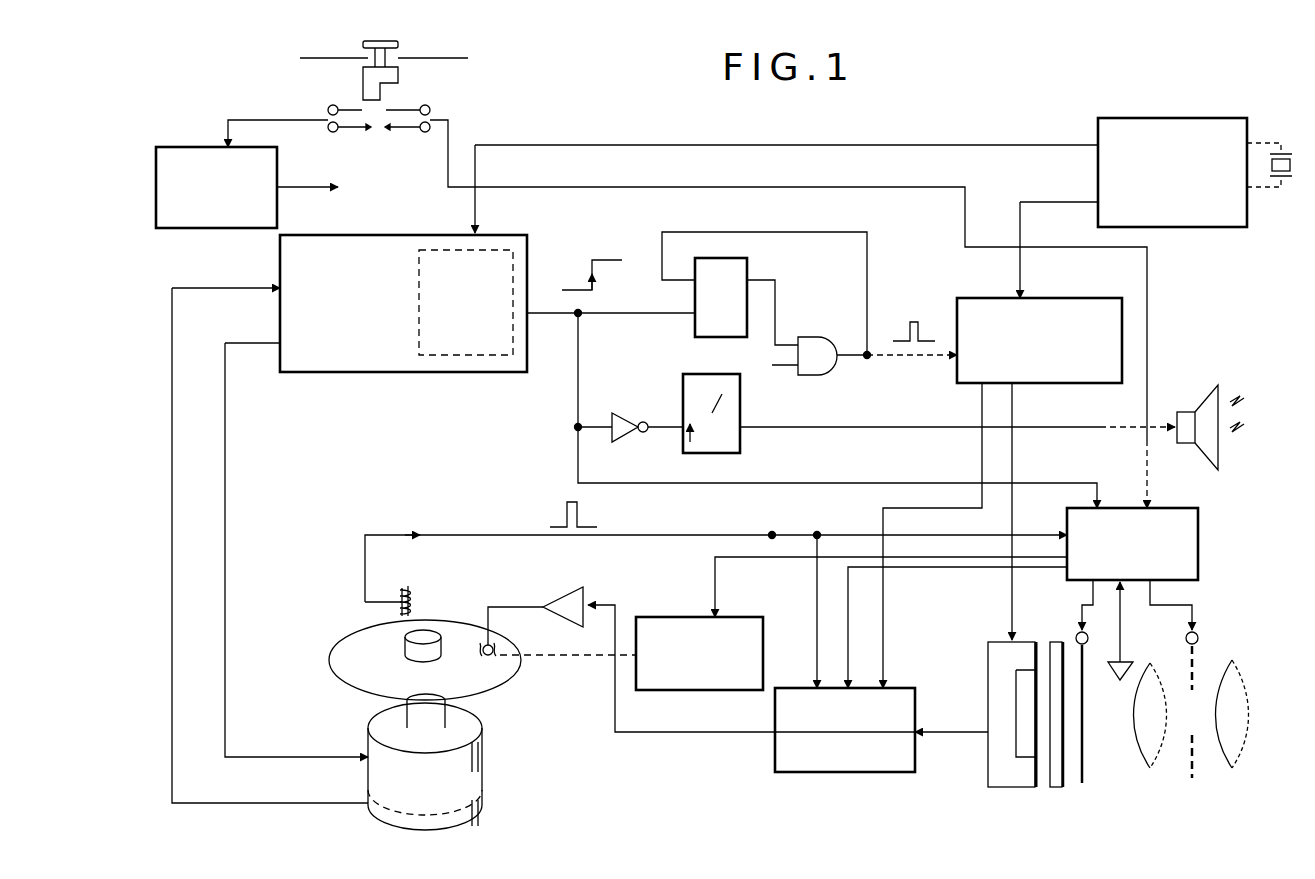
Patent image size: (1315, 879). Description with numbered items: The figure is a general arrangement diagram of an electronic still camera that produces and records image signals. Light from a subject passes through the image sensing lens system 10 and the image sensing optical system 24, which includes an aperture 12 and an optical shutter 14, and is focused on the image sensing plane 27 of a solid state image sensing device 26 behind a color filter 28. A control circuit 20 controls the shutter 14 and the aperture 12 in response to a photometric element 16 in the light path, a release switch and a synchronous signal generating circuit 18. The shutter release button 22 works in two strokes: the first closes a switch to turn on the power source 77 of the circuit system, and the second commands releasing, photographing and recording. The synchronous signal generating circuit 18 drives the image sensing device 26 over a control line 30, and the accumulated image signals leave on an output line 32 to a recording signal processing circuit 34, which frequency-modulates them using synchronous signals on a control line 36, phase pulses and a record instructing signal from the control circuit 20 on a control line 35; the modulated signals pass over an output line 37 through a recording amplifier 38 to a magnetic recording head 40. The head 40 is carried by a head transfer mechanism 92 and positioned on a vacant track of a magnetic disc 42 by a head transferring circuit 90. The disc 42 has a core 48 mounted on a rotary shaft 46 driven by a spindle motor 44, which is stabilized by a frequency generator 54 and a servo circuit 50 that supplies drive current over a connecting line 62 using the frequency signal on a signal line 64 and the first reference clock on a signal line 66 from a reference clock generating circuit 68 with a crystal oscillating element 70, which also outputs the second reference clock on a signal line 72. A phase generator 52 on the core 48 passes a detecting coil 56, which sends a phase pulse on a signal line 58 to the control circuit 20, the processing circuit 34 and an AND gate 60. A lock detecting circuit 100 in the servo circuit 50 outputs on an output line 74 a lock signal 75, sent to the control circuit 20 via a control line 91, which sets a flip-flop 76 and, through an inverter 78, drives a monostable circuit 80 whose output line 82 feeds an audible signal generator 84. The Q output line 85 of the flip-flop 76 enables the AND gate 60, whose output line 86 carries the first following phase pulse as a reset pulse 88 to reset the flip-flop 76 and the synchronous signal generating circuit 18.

The image sensing lens system 10 is at (1226, 770).
The aperture 12 is at (1184, 774).
The optical shutter 14 is at (1084, 768).
The photometric element 16 is at (1118, 680).
The synchronous signal generating circuit 18 is at (990, 280).
The control circuit 20 is at (1198, 520).
The shutter release button 22 is at (398, 72).
The image sensing optical system 24 is at (1242, 665).
The solid state image sensing device 26 is at (1036, 787).
The image sensing plane 27 is at (1016, 682).
The color filter 28 is at (1056, 640).
The control line 30 is at (1012, 405).
The output line 32 is at (948, 735).
The recording signal processing circuit 34 is at (840, 772).
The control line 35 is at (955, 567).
The control line 36 is at (938, 507).
The output line 37 is at (688, 732).
The recording amplifier 38 is at (570, 594).
The magnetic recording head 40 is at (492, 660).
The magnetic disc 42 is at (338, 662).
The spindle motor 44 is at (482, 757).
The rotary shaft 46 is at (407, 712).
The core 48 is at (441, 648).
The servo circuit 50 is at (360, 372).
The phase generator 52 is at (405, 637).
The frequency generator 54 is at (482, 797).
The detecting coil 56 is at (414, 600).
The signal line 58 is at (495, 535).
The AND gate 60 is at (828, 372).
The connecting line 62 is at (230, 424).
The signal line 64 is at (186, 430).
The signal line 66 is at (803, 145).
The reference clock generating circuit 68 is at (1155, 118).
The crystal oscillating element 70 is at (1292, 166).
The signal line 72 is at (1018, 203).
The output line 74 is at (556, 316).
The lock signal 75 is at (584, 265).
The flip-flop 76 is at (695, 324).
The power source 77 is at (202, 147).
The inverter 78 is at (624, 413).
The monostable circuit 80 is at (740, 447).
The output line 82 is at (822, 430).
The audible signal generator 84 is at (1206, 400).
The Q output line 85 is at (775, 300).
The output line 86 is at (845, 352).
The reset pulse 88 is at (918, 322).
The head transferring circuit 90 is at (748, 617).
The control line 91 is at (880, 483).
The head transfer mechanism 92 is at (562, 658).
The lock detecting circuit 100 is at (478, 355).